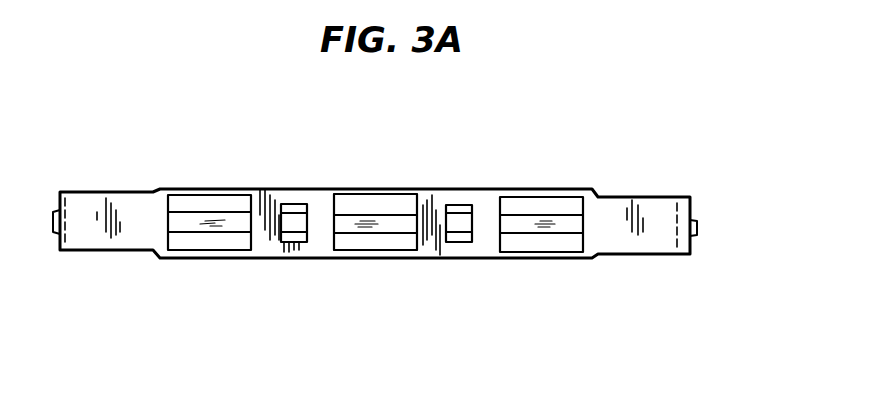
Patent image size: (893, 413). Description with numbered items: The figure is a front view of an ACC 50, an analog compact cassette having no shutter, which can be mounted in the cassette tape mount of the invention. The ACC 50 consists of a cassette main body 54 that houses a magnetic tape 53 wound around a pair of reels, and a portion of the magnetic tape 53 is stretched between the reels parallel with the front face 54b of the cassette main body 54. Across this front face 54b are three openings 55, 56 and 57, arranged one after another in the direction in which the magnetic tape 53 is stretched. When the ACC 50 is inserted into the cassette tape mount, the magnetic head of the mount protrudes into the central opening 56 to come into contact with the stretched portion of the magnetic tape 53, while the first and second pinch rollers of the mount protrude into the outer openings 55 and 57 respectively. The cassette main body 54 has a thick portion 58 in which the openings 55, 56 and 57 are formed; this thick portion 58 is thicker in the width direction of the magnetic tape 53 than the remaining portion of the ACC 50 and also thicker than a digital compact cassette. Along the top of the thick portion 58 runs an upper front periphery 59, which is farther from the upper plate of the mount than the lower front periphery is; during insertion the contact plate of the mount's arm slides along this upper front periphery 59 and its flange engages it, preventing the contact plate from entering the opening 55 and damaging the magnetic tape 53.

The ACC 50 is at (638, 188).
The magnetic tape 53 is at (388, 223).
The cassette main body 54 is at (118, 192).
The front face 54b is at (632, 240).
The opening 55 is at (540, 240).
The opening 56 is at (368, 240).
The opening 57 is at (190, 238).
The thick portion 58 is at (456, 190).
The upper front periphery 59 is at (357, 194).